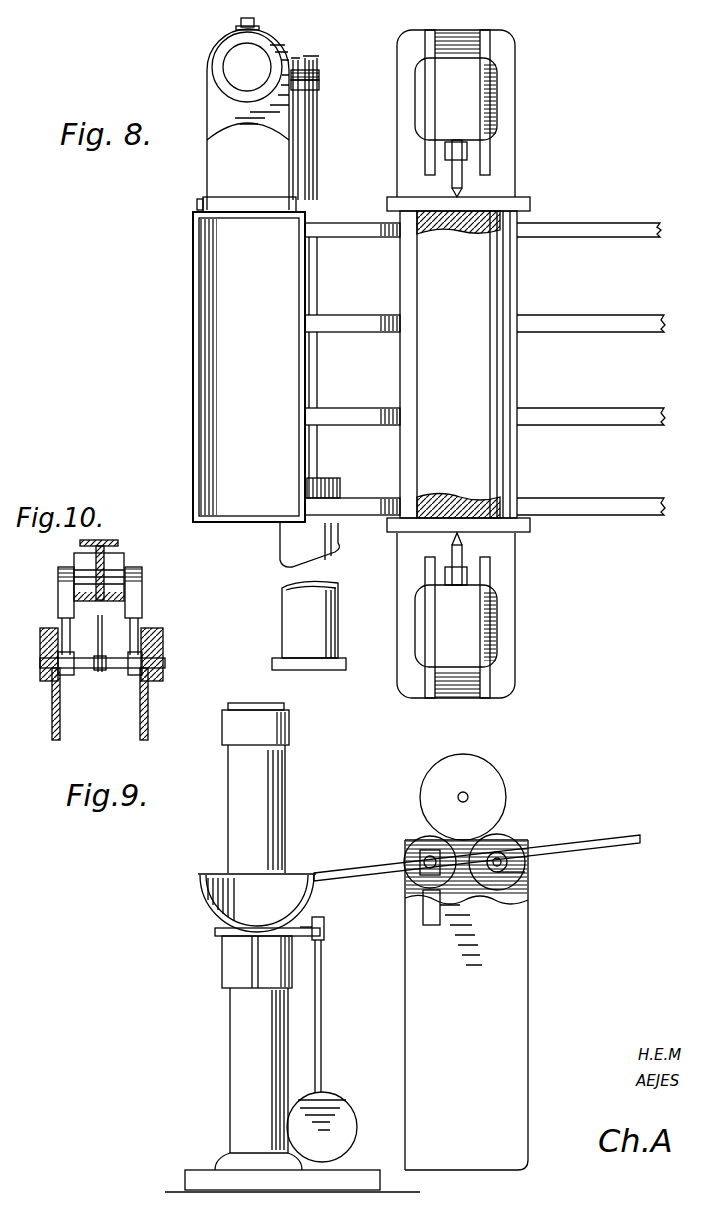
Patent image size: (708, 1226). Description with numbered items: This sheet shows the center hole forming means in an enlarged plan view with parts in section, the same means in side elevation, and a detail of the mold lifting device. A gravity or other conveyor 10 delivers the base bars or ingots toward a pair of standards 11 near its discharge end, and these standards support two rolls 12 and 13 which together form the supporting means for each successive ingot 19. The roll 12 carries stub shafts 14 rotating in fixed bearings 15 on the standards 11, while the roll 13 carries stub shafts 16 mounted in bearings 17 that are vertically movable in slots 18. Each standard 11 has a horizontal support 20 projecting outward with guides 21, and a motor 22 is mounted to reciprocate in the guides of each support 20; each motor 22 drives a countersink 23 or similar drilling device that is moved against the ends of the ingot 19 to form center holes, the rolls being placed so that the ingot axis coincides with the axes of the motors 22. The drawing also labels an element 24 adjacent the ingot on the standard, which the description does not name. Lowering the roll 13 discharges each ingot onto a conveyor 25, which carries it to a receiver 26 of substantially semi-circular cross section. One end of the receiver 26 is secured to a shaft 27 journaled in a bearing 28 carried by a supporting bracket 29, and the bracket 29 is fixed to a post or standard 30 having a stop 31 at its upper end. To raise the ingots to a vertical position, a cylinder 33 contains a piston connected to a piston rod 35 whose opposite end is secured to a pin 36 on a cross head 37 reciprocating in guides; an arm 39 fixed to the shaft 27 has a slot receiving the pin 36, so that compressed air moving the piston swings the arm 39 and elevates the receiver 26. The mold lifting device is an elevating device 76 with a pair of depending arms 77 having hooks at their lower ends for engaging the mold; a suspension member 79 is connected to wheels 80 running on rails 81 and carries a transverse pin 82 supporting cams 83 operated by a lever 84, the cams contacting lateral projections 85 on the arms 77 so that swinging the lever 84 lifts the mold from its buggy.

In FIG. 8, the conveyor 10 is at (596, 497).
In FIG. 9, the conveyor 10 is at (612, 838).
In FIG. 8, the standard 11 is at (529, 201).
In FIG. 9, the standard 11 is at (512, 1000).
In FIG. 8, the roll 12 is at (508, 394).
In FIG. 9, the roll 12 is at (505, 852).
In FIG. 8, the roll 13 is at (400, 392).
In FIG. 9, the roll 13 is at (433, 838).
In FIG. 9, the stub shaft 14 is at (528, 846).
In FIG. 9, the fixed bearing 15 is at (525, 874).
In FIG. 9, the stub shaft 16 is at (410, 858).
In FIG. 9, the bearing 17 is at (420, 862).
In FIG. 9, the slot 18 is at (432, 905).
In FIG. 8, the ingot 19 is at (458, 369).
In FIG. 9, the ingot 19 is at (475, 765).
In FIG. 8, the horizontal support 20 is at (515, 156).
In FIG. 8, the guide 21 is at (486, 150).
In FIG. 8, the motor 22 is at (482, 113).
In FIG. 8, the countersink 23 is at (462, 186).
In FIG. 8, the packing 24 is at (446, 238).
In FIG. 9, the packing 24 is at (468, 797).
In FIG. 9, the conveyor 25 is at (360, 882).
In FIG. 8, the receiver 26 is at (193, 448).
In FIG. 9, the receiver 26 is at (200, 888).
In FIG. 8, the shaft 27 is at (197, 203).
In FIG. 9, the shaft 27 is at (325, 928).
In FIG. 8, the bearing 28 is at (246, 208).
In FIG. 9, the bearing 28 is at (215, 931).
In FIG. 8, the supporting bracket 29 is at (248, 145).
In FIG. 9, the supporting bracket 29 is at (222, 972).
In FIG. 8, the post 30 is at (262, 62).
In FIG. 9, the post 30 is at (240, 1097).
In FIG. 8, the stop 31 is at (222, 118).
In FIG. 9, the stop 31 is at (288, 740).
In FIG. 8, the cylinder 33 is at (292, 644).
In FIG. 9, the cylinder 33 is at (346, 1118).
In FIG. 8, the piston rod 35 is at (312, 377).
In FIG. 8, the pin 36 is at (319, 77).
In FIG. 8, the cross head 37 is at (319, 90).
In FIG. 8, the arm 39 is at (306, 165).
In FIG. 9, the arm 39 is at (322, 1075).
In FIG. 10, the elevating device 76 is at (133, 716).
In FIG. 10, the depending arm 77 is at (52, 718).
In FIG. 10, the suspension member 79 is at (58, 601).
In FIG. 10, the wheel 80 is at (80, 566).
In FIG. 10, the rail 81 is at (106, 542).
In FIG. 10, the transverse pin 82 is at (165, 665).
In FIG. 10, the cam 83 is at (40, 640).
In FIG. 10, the lever 84 is at (98, 646).
In FIG. 10, the lateral projection 85 is at (46, 628).